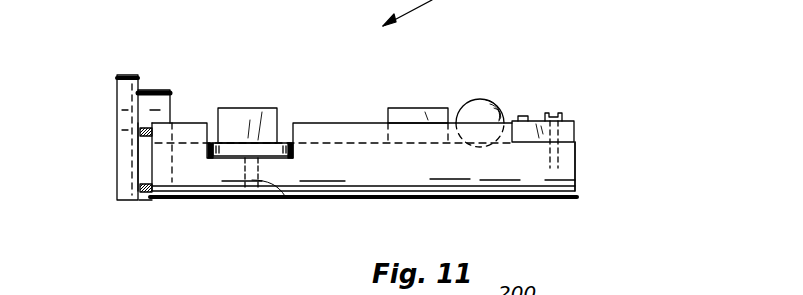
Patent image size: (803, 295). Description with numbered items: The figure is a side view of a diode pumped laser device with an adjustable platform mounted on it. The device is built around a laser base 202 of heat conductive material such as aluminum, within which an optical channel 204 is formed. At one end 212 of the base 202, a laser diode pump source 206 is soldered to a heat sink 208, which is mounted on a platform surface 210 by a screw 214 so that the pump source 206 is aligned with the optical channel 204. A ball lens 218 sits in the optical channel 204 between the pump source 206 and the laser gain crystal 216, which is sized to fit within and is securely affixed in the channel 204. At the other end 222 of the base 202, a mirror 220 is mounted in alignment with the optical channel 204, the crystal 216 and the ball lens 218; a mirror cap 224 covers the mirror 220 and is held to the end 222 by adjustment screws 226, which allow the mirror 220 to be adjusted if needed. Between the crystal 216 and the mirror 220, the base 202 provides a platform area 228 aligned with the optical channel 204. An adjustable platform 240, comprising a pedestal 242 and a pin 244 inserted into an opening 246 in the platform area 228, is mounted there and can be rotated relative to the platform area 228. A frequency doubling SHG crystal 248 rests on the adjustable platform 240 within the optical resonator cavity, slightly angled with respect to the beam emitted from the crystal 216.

The laser base 202 is at (488, 180).
The optical channel 204 is at (345, 122).
The laser diode pump source 206 is at (522, 116).
The heat sink 208 is at (567, 128).
The platform surface 210 is at (575, 137).
The end 212 is at (577, 186).
The screw 214 is at (560, 115).
The laser gain medium or crystal 216 is at (408, 108).
The ball lens 218 is at (480, 106).
The mirror 220 is at (154, 90).
The other end 222 is at (150, 201).
The mirror cap 224 is at (127, 75).
The adjustment screws 226 is at (141, 128).
The platform area 228 is at (286, 132).
The adjustable platform 240 is at (211, 140).
The pedestal 242 is at (275, 150).
The pin 244 is at (248, 192).
The opening 246 is at (262, 182).
The SHG crystal 248 is at (248, 125).